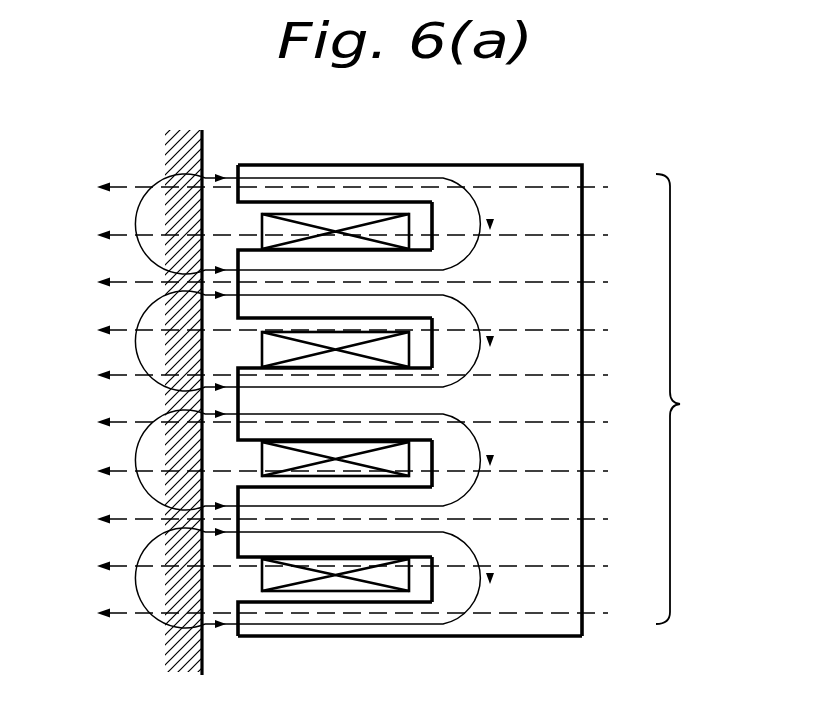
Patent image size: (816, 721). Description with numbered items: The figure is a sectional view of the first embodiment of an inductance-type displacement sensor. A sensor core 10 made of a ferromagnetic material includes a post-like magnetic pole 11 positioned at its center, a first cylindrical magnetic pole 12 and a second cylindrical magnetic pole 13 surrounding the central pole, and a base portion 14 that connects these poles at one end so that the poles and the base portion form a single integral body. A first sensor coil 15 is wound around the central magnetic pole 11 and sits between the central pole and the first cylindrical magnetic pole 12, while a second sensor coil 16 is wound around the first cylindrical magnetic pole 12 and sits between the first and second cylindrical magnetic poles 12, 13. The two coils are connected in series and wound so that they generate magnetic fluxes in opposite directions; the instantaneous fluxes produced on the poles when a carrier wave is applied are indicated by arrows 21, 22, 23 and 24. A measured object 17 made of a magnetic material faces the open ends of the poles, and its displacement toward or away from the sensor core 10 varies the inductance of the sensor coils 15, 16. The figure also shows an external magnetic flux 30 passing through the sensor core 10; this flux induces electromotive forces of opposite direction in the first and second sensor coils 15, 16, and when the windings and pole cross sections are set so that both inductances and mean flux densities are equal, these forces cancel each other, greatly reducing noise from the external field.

The sensor core 10 is at (528, 164).
The post-like magnetic pole 11 is at (236, 404).
The first cylindrical magnetic pole 12 is at (212, 262).
The second cylindrical magnetic pole 13 is at (232, 176).
The base portion 14 is at (522, 628).
The first sensor coil 15 is at (433, 343).
The second sensor coil 16 is at (384, 215).
The measured object 17 is at (207, 658).
The arrow (magnetic flux) 21 is at (332, 166).
The arrow (magnetic flux) 22 is at (485, 324).
The arrow (magnetic flux) 23 is at (470, 505).
The arrow (magnetic flux) 24 is at (323, 638).
The magnetic flux (external) 30 is at (689, 399).